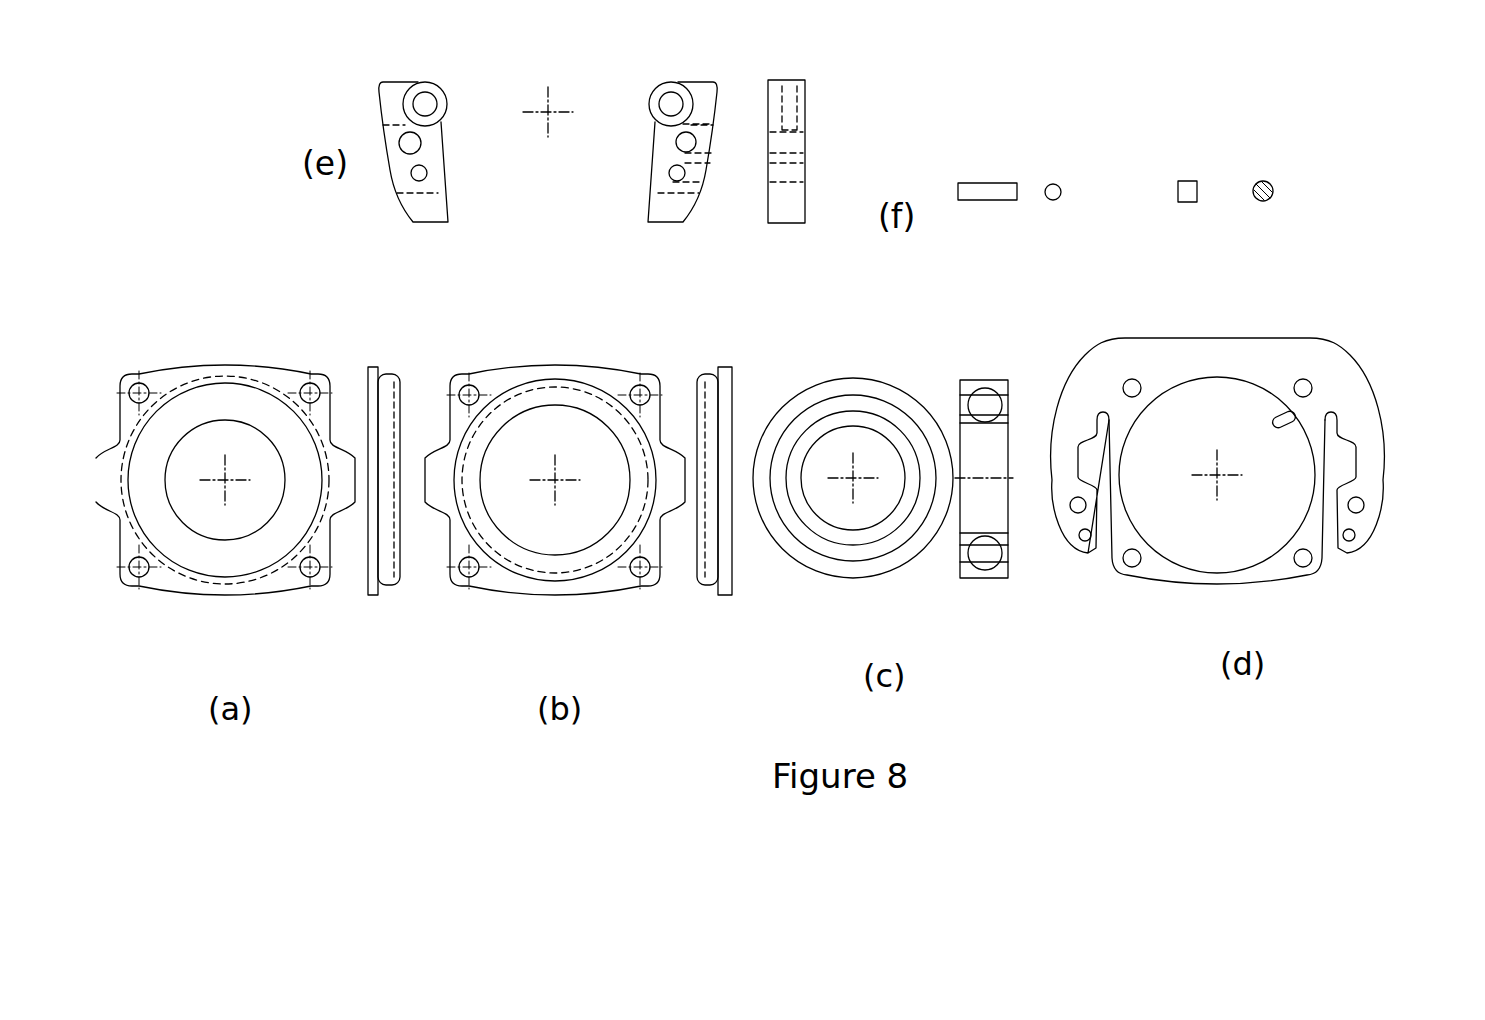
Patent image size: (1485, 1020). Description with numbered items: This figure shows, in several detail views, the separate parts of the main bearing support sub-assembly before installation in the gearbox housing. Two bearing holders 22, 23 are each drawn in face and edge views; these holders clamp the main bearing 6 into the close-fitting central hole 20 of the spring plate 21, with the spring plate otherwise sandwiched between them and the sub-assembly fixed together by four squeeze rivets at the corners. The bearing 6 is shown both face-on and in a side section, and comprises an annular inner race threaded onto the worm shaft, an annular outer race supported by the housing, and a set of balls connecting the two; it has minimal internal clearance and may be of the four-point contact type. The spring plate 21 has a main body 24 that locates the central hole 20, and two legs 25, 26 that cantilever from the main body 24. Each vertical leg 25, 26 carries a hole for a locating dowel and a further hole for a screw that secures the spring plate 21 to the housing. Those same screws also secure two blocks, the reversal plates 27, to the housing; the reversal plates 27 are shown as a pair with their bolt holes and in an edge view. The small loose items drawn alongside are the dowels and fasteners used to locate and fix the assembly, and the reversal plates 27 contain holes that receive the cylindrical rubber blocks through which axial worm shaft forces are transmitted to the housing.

The bearing 6 is at (822, 578).
The central hole 20 is at (1290, 412).
The spring plate 21 is at (1261, 509).
The bearing holder 22 is at (203, 592).
The bearing holder 23 is at (530, 592).
The main body 24 is at (1275, 571).
The leg 25 is at (1250, 505).
The leg 26 is at (1077, 549).
The reversal plate 27 is at (448, 203).